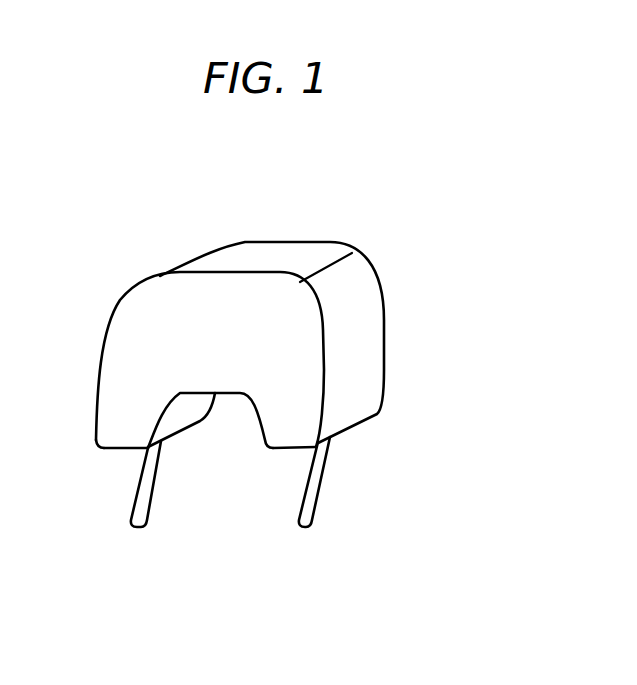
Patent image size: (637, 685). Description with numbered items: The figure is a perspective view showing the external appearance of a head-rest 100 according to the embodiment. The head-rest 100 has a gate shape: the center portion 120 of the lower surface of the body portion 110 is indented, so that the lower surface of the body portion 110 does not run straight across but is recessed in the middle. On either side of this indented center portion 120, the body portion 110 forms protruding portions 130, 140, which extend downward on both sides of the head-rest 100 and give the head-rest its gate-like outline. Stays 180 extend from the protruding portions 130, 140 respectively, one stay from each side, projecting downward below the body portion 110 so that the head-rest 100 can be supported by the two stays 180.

The head-rest 100 is at (118, 235).
The body portion 110 is at (379, 295).
The center portion 120 is at (215, 395).
The protruding portion 130 is at (113, 450).
The protruding portion 140 is at (283, 450).
The stay 180 is at (315, 487).